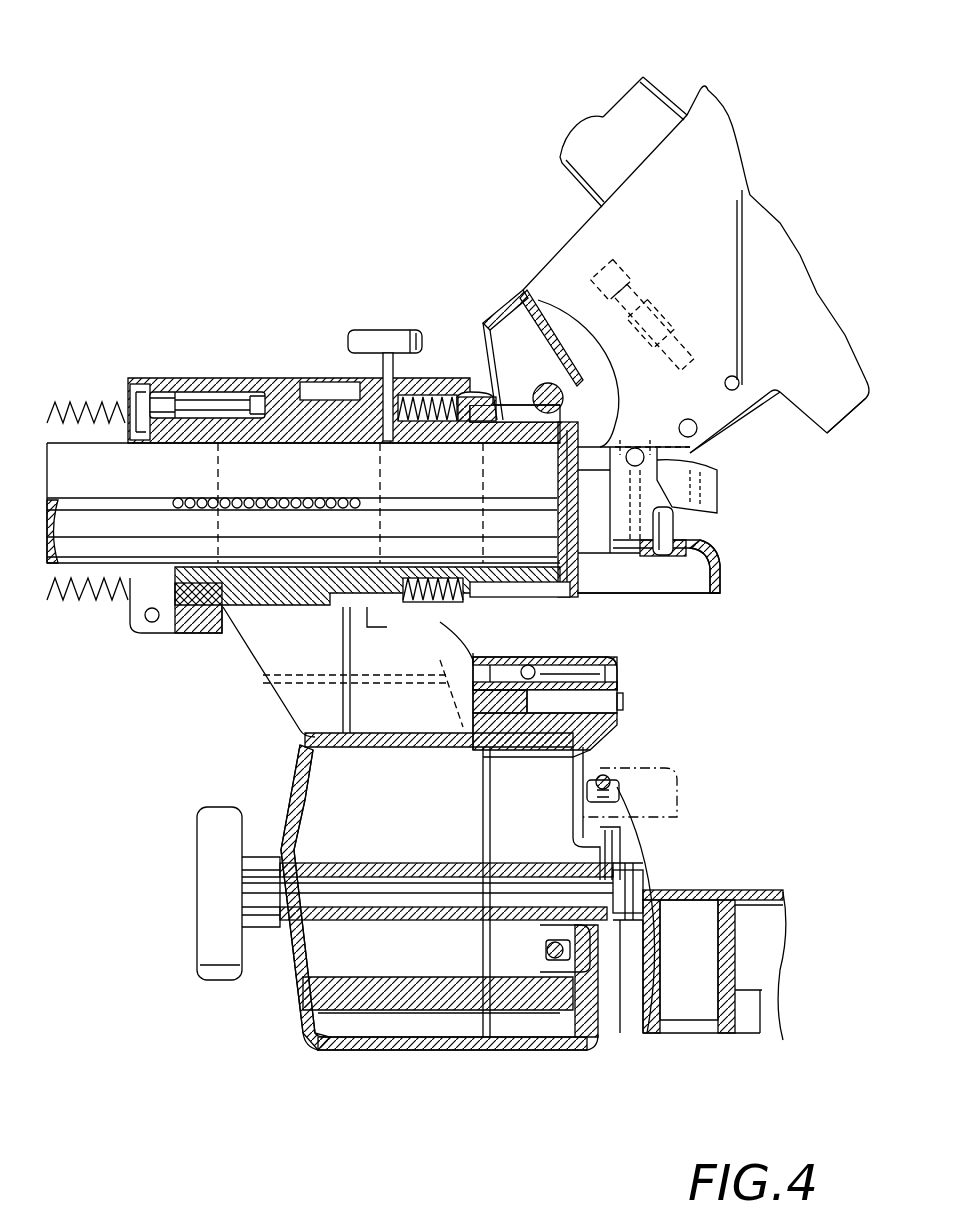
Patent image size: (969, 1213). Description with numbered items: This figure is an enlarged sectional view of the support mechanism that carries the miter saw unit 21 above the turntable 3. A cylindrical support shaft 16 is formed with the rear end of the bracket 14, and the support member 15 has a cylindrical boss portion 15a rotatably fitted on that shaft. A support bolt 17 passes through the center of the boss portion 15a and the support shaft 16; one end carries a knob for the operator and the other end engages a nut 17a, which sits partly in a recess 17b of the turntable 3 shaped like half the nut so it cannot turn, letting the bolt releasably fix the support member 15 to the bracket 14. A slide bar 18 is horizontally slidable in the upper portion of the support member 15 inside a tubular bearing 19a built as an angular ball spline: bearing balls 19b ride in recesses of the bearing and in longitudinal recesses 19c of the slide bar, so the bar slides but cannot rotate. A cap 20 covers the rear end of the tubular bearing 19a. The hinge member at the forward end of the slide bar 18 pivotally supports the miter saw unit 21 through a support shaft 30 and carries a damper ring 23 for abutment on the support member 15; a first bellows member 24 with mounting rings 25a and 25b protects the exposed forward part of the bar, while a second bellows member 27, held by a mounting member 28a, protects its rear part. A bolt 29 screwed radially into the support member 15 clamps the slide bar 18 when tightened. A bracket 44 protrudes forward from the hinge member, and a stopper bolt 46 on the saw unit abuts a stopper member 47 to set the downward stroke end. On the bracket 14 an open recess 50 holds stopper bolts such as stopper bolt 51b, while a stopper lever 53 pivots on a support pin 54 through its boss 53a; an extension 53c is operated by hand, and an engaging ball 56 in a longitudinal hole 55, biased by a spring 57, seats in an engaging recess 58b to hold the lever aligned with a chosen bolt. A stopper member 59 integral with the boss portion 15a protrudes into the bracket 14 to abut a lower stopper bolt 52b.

The turntable 3 is at (755, 893).
The bracket 14 is at (567, 1053).
The support member 15 is at (323, 1046).
The boss portion 15a is at (500, 1043).
The support shaft 16 is at (517, 1043).
The support bolt 17 is at (448, 892).
The nut 17a is at (623, 871).
The recess 17b is at (650, 1022).
The slide bar 18 is at (540, 540).
The tubular bearing 19a is at (302, 421).
The bearing balls 19b is at (226, 603).
The longitudinal recesses 19c is at (112, 503).
The cap 20 is at (191, 391).
The miter saw unit 21 is at (686, 100).
The damper ring 23 is at (404, 395).
The first bellows member 24 is at (460, 396).
The mounting ring 25a is at (457, 657).
The mounting ring 25b is at (430, 617).
The second bellows member 27 is at (80, 600).
The mounting member 28a is at (152, 632).
The bolt 29 is at (384, 340).
The support shaft 30 is at (545, 384).
The bracket 44 is at (707, 548).
The stopper bolt 46 is at (760, 398).
The stopper member 47 is at (718, 485).
The recess 50 is at (620, 837).
The stopper bolt 51b is at (620, 783).
The stopper bolt 52b is at (567, 952).
The stopper lever 53 is at (605, 740).
The boss 53a is at (612, 657).
The extension 53c is at (657, 757).
The support pin 54 is at (617, 700).
The longitudinal hole 55 is at (584, 665).
The engaging ball 56 is at (483, 752).
The spring 57 is at (536, 665).
The engaging recess 58b is at (460, 750).
The stopper member 59 is at (590, 1047).